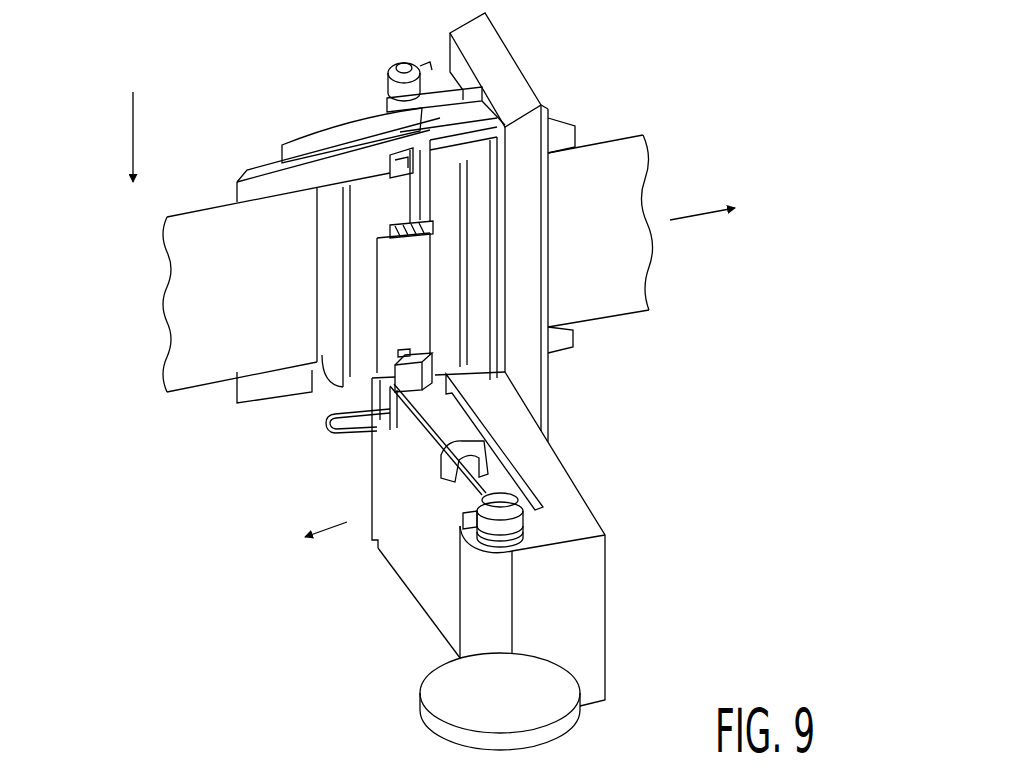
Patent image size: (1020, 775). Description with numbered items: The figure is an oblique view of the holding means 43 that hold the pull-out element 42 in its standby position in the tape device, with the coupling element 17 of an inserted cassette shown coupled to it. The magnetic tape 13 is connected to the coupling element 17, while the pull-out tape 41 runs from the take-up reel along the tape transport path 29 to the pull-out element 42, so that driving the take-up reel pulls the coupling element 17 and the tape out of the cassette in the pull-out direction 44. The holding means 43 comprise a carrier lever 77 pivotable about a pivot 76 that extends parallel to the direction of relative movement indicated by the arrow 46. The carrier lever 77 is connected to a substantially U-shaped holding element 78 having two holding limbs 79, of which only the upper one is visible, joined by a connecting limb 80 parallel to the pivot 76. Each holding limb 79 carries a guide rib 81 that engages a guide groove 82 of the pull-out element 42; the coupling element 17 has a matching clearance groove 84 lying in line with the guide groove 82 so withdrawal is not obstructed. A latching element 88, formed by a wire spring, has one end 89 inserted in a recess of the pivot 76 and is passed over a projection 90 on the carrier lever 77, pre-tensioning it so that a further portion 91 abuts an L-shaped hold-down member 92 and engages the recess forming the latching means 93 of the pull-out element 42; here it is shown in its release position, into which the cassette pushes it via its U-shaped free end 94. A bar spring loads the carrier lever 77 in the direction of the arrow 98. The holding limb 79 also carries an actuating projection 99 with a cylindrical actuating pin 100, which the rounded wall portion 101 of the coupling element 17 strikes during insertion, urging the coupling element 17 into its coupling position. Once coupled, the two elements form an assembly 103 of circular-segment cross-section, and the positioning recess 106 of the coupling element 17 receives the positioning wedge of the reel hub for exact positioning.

The magnetic tape 13 is at (168, 332).
The coupling element 17 is at (357, 221).
The tape transport path 29 is at (688, 285).
The pull-out tape 41 is at (643, 168).
The pull-out element 42 is at (575, 127).
The holding means 43 is at (520, 561).
The pull-out direction 44 is at (705, 208).
The direction of relative movement 46 is at (133, 133).
The pivot 76 is at (520, 523).
The carrier lever 77 is at (428, 592).
The U-shaped holding element 78 is at (531, 227).
The holding limb 79 is at (492, 43).
The connecting limb 80 is at (541, 245).
The guide rib 81 is at (485, 118).
The guide groove 82 is at (462, 125).
The clearance groove 84 is at (318, 148).
The latching element 88 is at (433, 435).
The end of wire spring 89 is at (463, 530).
The projection 90 is at (447, 473).
The further portion of wire spring 91 is at (413, 407).
The L-shaped hold-down member 92 is at (415, 358).
The latching means 93 is at (402, 350).
The U-shaped free end 94 is at (322, 418).
The direction of resilient load 98 is at (333, 525).
The actuating projection 99 is at (428, 62).
The actuating pin 100 is at (397, 78).
The rounded wall portion 101 is at (422, 200).
The assembly 103 is at (385, 110).
The positioning recess 106 is at (397, 172).